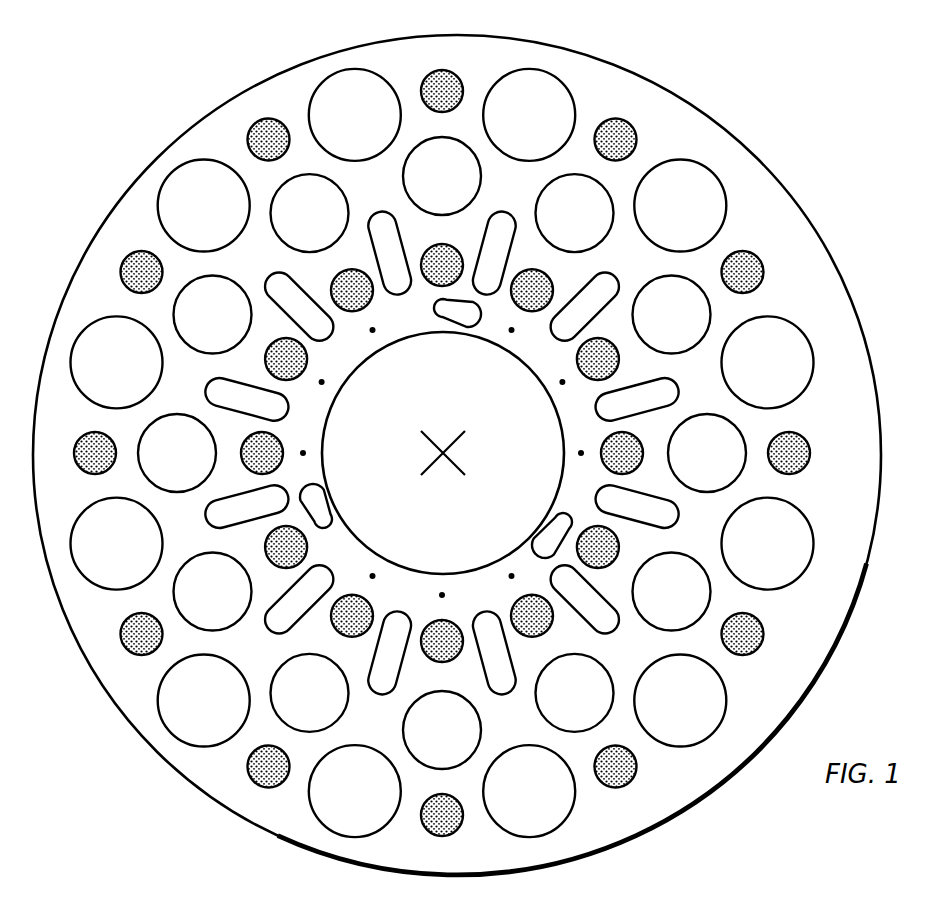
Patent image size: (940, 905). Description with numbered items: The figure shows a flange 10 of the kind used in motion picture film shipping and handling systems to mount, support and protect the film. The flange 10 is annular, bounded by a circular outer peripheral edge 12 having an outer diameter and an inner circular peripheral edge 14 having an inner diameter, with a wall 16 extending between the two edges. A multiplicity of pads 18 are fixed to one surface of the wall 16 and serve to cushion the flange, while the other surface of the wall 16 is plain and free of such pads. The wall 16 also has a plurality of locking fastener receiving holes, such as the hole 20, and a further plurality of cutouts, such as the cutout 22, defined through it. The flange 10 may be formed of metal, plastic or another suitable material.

The flange 10 is at (735, 786).
The outer peripheral edge 12 is at (819, 689).
The inner circular peripheral edge 14 is at (373, 542).
The wall 16 is at (855, 497).
The pads 18 is at (806, 435).
The locking fastener receiving hole 20 is at (326, 487).
The cutout 22 is at (814, 543).